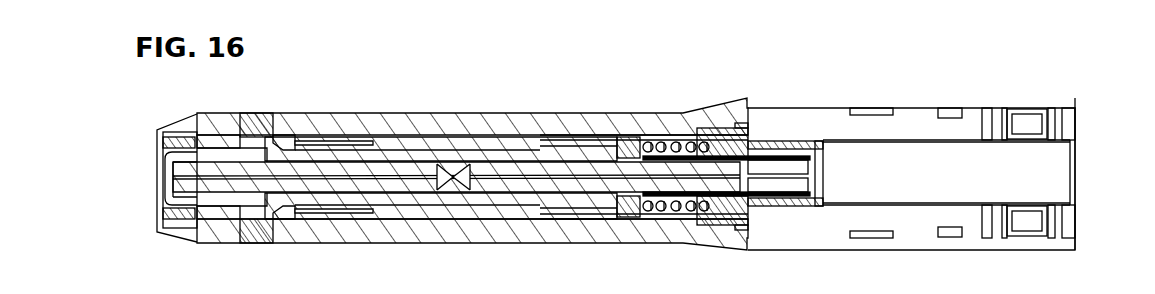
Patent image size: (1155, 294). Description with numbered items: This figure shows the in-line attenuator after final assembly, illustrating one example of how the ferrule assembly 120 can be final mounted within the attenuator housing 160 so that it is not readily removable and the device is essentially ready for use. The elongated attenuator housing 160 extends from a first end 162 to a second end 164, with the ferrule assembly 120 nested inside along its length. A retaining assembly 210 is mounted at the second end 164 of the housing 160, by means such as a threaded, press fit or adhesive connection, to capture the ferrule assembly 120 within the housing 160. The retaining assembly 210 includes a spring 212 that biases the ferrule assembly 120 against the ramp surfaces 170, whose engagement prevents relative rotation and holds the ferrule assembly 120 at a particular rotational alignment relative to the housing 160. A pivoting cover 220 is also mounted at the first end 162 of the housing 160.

The attenuator ferrule assembly 120 is at (446, 125).
The attenuator housing 160 is at (946, 89).
The first end of the attenuator housing 162 is at (197, 113).
The second end of the attenuator housing 164 is at (1076, 99).
The ramped surfaces 170 is at (298, 207).
The retaining assembly 210 is at (750, 136).
The spring 212 is at (661, 137).
The pivoting cover 220 is at (157, 176).